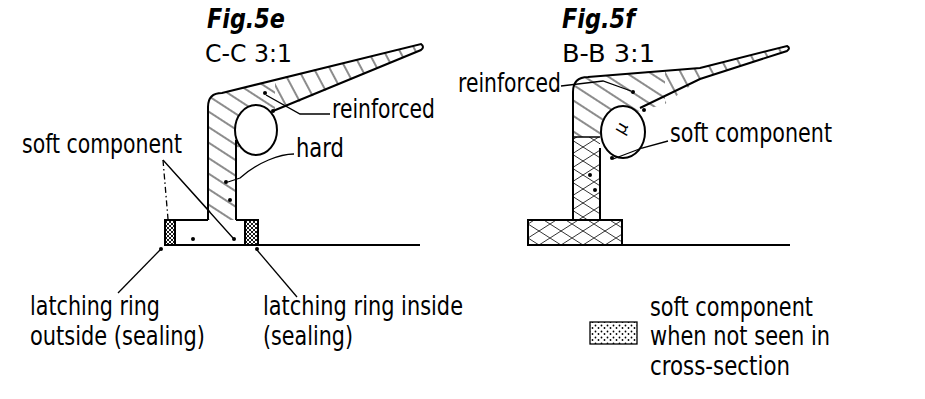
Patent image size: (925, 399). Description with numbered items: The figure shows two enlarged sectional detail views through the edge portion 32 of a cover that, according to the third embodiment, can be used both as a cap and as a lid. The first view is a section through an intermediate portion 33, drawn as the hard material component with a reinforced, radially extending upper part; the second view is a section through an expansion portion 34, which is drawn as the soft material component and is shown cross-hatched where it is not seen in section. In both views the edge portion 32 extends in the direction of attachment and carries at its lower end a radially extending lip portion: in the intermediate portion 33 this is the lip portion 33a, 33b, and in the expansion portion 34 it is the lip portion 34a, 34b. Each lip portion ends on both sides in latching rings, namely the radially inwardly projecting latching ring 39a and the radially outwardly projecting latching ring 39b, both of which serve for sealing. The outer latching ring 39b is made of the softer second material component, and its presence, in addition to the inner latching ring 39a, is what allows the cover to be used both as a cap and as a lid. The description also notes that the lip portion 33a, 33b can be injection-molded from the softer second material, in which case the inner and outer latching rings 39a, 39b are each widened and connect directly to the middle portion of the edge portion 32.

In FIG. 5F, the edge portion 32 is at (622, 248).
In FIG. 5E, the intermediate portion 33 is at (231, 200).
In FIG. 5E, the lip portion 33a is at (234, 242).
In FIG. 5E, the lip portion 33b is at (193, 242).
In FIG. 5F, the expansion portion 34 is at (597, 181).
In FIG. 5F, the lip portion 34a is at (603, 218).
In FIG. 5F, the lip portion 34b is at (550, 218).
In FIG. 5E, the latching ring 39a is at (258, 232).
In FIG. 5F, the latching ring 39a is at (624, 230).
In FIG. 5E, the latching ring 39b is at (165, 237).
In FIG. 5F, the latching ring 39b is at (526, 236).